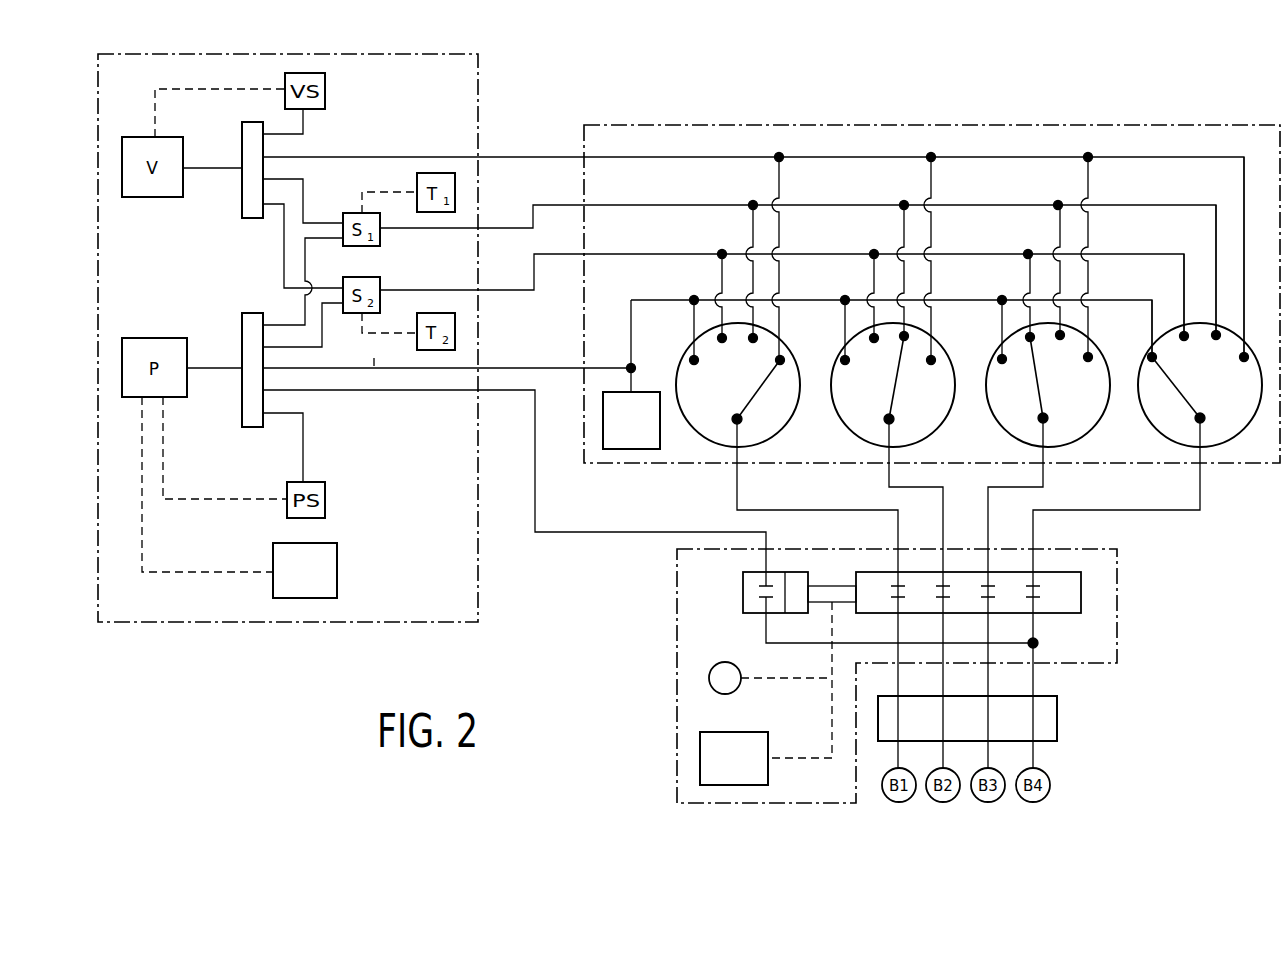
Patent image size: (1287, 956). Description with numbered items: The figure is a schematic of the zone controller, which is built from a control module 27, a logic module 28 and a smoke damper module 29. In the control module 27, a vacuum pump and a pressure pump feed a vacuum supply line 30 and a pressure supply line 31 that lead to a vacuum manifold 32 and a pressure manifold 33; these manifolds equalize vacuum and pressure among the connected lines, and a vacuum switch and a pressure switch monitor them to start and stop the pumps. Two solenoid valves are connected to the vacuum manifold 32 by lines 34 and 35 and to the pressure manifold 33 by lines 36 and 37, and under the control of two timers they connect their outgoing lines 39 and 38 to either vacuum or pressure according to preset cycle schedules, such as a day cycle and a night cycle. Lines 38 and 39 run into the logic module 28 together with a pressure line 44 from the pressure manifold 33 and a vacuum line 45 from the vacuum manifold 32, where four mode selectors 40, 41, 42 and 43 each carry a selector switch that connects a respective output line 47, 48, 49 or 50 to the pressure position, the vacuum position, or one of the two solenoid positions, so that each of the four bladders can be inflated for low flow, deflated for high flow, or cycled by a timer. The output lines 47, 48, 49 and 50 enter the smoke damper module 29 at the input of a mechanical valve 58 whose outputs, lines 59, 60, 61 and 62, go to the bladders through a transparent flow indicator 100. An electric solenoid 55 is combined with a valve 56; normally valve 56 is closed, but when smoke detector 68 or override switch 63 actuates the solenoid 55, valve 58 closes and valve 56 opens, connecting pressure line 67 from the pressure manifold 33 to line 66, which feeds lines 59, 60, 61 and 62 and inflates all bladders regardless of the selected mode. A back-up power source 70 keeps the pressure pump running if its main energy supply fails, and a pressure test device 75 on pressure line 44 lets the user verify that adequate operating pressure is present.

The control module 27 is at (484, 116).
The logic module 28 is at (1102, 120).
The smoke damper module 29 is at (1124, 622).
The vacuum supply line 30 is at (210, 166).
The pressure supply line 31 is at (213, 366).
The vacuum manifold 32 is at (242, 194).
The pressure manifold 33 is at (242, 412).
The line 34 is at (303, 207).
The line 35 is at (284, 262).
The line 36 is at (305, 268).
The line 37 is at (322, 334).
The line 38 is at (420, 288).
The line 39 is at (418, 230).
The mode selector 40 is at (750, 306).
The mode selector 41 is at (900, 306).
The mode selector 42 is at (1058, 307).
The mode selector 43 is at (1206, 307).
The pressure line 44 is at (360, 372).
The vacuum line 45 is at (337, 157).
The output line 47 is at (737, 495).
The output line 48 is at (889, 476).
The output line 49 is at (1043, 478).
The output line 50 is at (1200, 486).
The electric solenoid 55 is at (804, 613).
The valve 56 is at (753, 588).
The mechanical valve 58 is at (1070, 610).
The line 59 is at (904, 643).
The line 60 is at (949, 643).
The line 61 is at (994, 643).
The line 62 is at (1036, 639).
The override switch 63 is at (720, 662).
The line 66 is at (844, 643).
The pressure line 67 is at (405, 392).
The smoke detector 68 is at (752, 732).
The back-up power source 70 is at (337, 572).
The pressure test device 75 is at (660, 432).
The transparent flow indicator 100 is at (1057, 721).